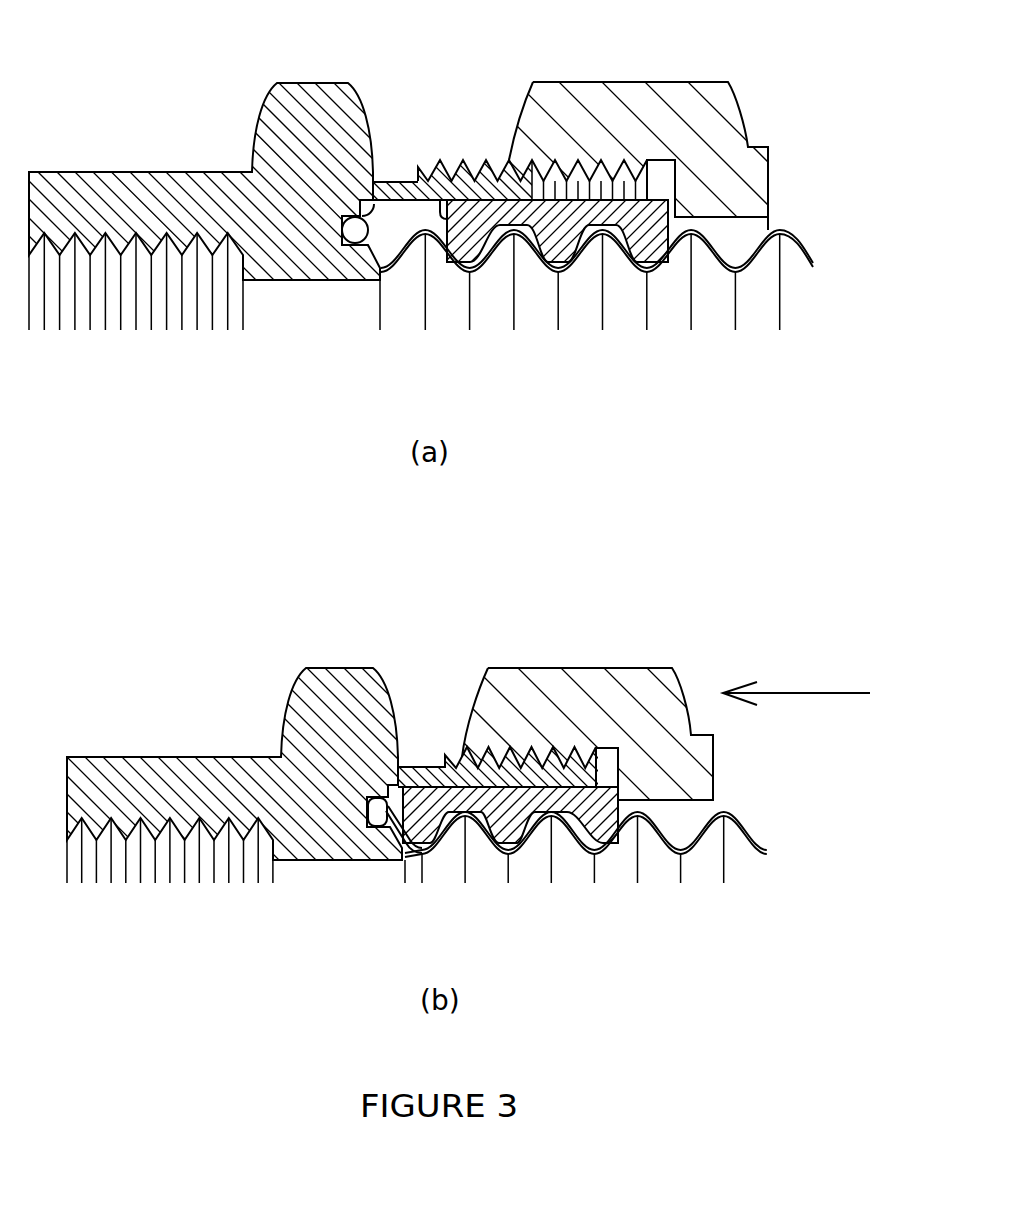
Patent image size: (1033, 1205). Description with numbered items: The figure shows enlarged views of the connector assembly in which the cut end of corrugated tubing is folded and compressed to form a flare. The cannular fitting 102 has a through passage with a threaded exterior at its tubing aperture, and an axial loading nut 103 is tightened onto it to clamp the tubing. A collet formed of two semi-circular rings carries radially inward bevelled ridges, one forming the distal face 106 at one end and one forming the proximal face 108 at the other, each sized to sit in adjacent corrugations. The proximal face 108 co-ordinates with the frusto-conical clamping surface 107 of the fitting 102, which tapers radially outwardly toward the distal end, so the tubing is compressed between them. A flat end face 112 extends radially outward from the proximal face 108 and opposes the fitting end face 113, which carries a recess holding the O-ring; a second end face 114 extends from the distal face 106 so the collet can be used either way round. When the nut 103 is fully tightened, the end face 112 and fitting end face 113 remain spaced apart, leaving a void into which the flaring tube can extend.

The fitting 102 is at (107, 172).
The axial loading nut 103 is at (592, 95).
The distal face 106 is at (665, 258).
The clamping surface 107 is at (381, 268).
The proximal face 108 is at (448, 253).
The flat end face 112 is at (455, 162).
The fitting end face 113 is at (378, 208).
The second end face 114 is at (673, 223).